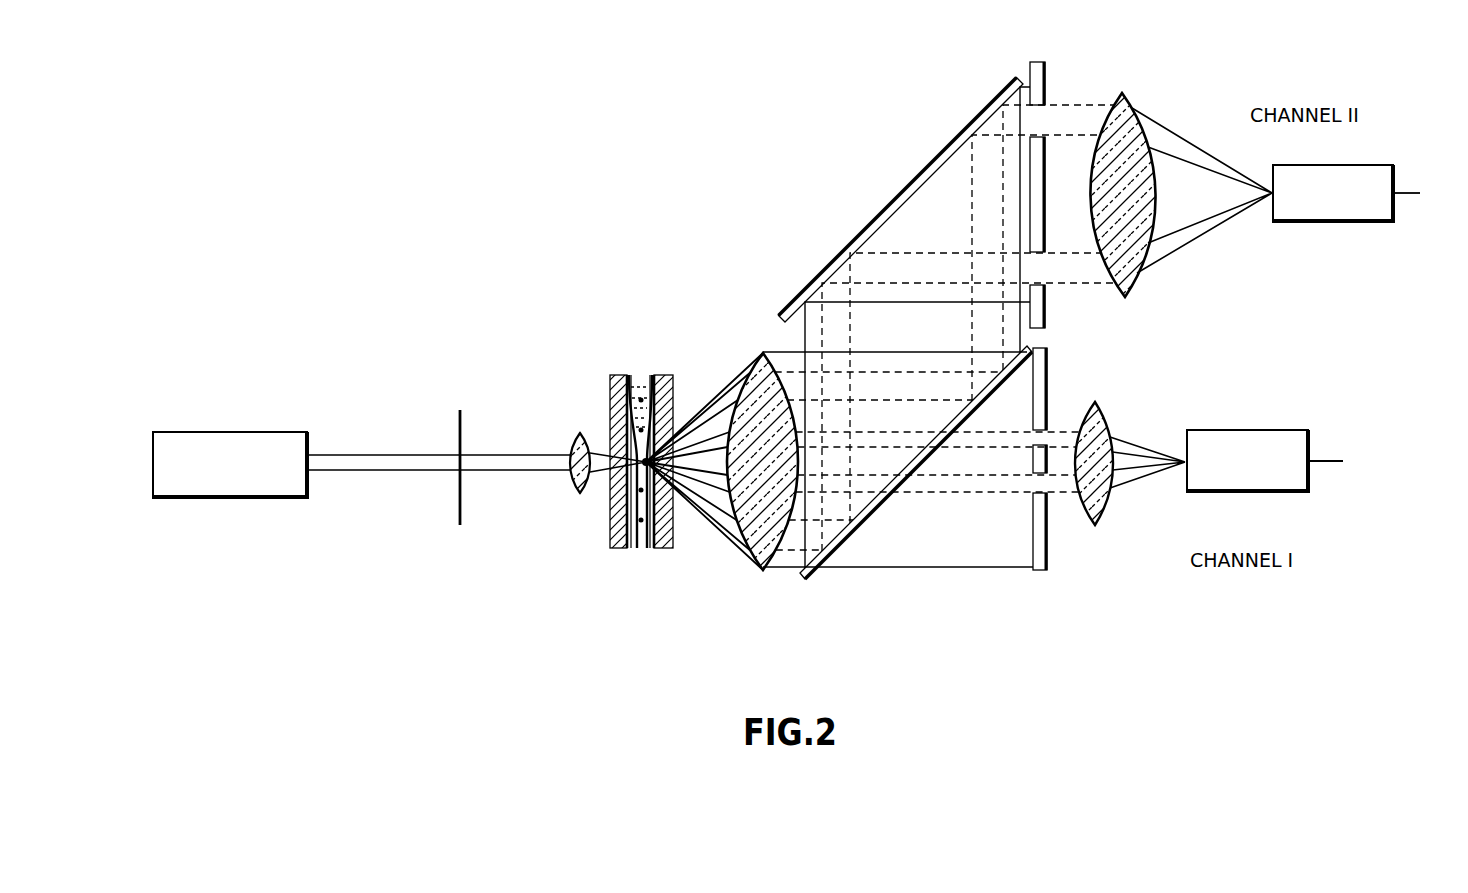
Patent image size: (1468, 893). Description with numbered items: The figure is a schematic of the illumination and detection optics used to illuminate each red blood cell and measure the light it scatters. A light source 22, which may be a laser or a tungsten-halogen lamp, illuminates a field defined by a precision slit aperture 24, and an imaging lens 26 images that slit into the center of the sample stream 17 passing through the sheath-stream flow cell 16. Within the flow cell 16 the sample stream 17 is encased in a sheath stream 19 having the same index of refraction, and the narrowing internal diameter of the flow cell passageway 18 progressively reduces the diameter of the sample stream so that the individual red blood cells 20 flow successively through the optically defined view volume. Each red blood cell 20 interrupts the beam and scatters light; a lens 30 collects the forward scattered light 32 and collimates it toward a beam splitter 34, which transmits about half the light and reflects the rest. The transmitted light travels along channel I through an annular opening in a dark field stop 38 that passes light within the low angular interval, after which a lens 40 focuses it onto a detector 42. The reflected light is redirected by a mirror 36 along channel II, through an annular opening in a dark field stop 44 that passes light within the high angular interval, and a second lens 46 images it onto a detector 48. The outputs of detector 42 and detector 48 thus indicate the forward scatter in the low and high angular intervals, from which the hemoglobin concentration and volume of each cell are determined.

The sheath-stream flow cell 16 is at (610, 541).
The sample stream 17 is at (632, 376).
The flow cell passageway 18 is at (630, 550).
The sheath stream 19 is at (614, 376).
The red blood cell 20 is at (651, 376).
The light source 22 is at (286, 433).
The precision slit aperture 24 is at (463, 424).
The imaging lens 26 is at (577, 492).
The lens 30 is at (757, 364).
The forward scattered light 32 is at (730, 540).
The beam splitter 34 is at (812, 578).
The mirror 36 is at (891, 200).
The dark field stop 38 is at (1048, 376).
The lens 40 is at (1110, 416).
The detector 42 is at (1302, 432).
The dark field stop 44 is at (1046, 66).
The second lens 46 is at (1133, 104).
The detector 48 is at (1384, 176).